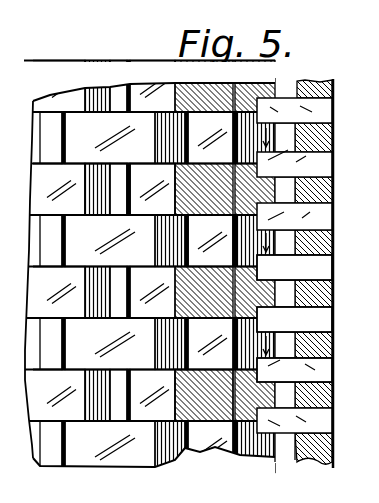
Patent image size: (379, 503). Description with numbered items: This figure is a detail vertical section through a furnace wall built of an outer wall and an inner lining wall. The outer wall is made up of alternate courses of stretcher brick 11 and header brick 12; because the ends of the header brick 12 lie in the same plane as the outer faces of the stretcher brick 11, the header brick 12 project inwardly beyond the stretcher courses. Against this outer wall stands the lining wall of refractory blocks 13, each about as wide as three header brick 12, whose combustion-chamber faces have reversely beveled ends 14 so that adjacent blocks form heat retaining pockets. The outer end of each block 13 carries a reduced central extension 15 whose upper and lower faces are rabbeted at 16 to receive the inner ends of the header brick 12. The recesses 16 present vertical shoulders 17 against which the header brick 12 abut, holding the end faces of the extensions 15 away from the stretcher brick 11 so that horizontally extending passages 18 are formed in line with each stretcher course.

The stretcher brick 11 is at (325, 196).
The header brick 12 is at (333, 110).
The refractory lining block 13 is at (143, 176).
The beveled ends 14 is at (116, 210).
The reduced central extension 15 is at (277, 242).
The rabbeted recesses 16 is at (294, 370).
The vertical shoulders 17 is at (294, 294).
The horizontally extending passages 18 is at (288, 134).